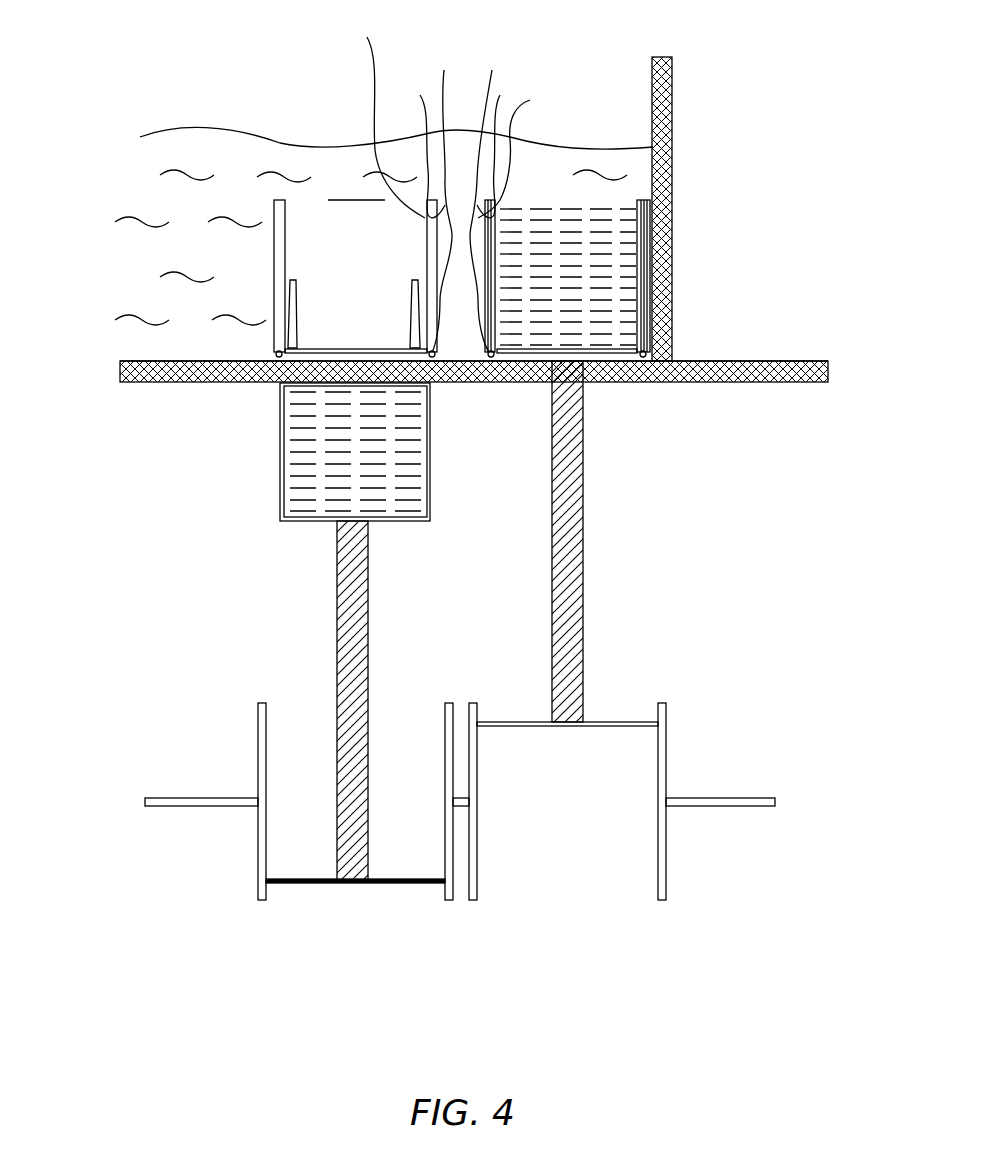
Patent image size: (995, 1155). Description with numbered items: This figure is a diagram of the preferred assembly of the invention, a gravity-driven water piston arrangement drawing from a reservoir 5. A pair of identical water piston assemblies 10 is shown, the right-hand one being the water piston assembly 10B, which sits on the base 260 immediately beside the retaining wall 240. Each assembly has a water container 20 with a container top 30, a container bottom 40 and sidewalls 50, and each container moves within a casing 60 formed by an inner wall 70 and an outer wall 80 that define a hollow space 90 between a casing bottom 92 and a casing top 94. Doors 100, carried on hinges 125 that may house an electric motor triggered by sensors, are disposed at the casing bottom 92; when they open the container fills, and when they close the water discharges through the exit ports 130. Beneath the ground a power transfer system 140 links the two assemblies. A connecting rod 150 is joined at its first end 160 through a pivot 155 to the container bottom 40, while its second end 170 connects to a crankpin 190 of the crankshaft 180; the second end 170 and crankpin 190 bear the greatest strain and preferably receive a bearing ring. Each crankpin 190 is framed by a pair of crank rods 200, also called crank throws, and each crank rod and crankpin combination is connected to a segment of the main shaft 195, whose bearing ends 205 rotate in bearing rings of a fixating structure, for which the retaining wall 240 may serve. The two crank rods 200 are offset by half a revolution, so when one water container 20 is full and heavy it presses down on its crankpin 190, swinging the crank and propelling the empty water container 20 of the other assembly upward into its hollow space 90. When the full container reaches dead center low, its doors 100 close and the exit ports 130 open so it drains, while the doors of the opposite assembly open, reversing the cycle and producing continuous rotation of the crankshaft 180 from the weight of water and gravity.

The reservoir 5 is at (200, 82).
The water piston assembly 10 is at (163, 447).
The water piston assembly 10B is at (680, 450).
The water container 20 is at (330, 460).
The container top 30 is at (640, 195).
The container bottom 40 is at (430, 520).
The sidewall 50 is at (300, 420).
The casing 60 is at (320, 163).
The inner wall 70 is at (452, 118).
The outer wall 80 is at (464, 145).
The hollow space 90 is at (280, 200).
The casing bottom 92 is at (413, 318).
The casing top 94 is at (357, 203).
The doors 100 is at (348, 345).
The hinges 125 is at (98, 357).
The exit ports 130 is at (288, 523).
The power transfer system 140 is at (775, 383).
The connecting rod 150 is at (346, 633).
The pivot 155 is at (371, 530).
The first end 160 is at (336, 540).
The second end 170 is at (340, 880).
The crankshaft 180 is at (663, 912).
The crankpin 190 is at (392, 881).
The main shaft 195 is at (190, 800).
The crank rod 200 is at (261, 714).
The bearing end 205 is at (145, 800).
The retaining wall 240 is at (660, 233).
The base 260 is at (122, 383).